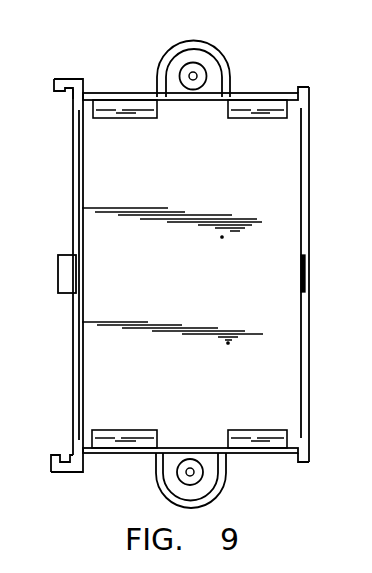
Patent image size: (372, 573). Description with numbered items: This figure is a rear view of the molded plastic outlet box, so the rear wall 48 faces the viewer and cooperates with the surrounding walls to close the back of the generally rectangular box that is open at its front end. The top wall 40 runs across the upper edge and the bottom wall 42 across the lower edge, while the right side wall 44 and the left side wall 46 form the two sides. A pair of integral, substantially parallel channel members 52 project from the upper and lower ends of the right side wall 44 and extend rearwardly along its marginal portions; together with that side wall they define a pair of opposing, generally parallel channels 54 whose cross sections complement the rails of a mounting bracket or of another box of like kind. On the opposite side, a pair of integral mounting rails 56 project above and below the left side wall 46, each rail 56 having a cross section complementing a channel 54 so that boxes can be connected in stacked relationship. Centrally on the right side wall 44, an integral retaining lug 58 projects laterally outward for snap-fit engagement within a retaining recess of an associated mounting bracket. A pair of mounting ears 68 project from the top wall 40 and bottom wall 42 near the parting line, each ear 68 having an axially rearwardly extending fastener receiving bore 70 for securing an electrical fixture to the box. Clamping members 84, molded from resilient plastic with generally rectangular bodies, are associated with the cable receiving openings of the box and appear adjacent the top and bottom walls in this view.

The top wall 40 is at (258, 94).
The bottom wall 42 is at (262, 455).
The right side wall 44 is at (73, 328).
The left side wall 46 is at (301, 327).
The rear wall 48 is at (280, 171).
The channel member 52 is at (68, 78).
The channel 54 is at (67, 91).
The mounting rail 56 is at (300, 88).
The retaining lug 58 is at (60, 255).
The mounting ear 68 is at (226, 74).
The fastener receiving bore 70 is at (193, 76).
The clamping member 84 is at (253, 124).